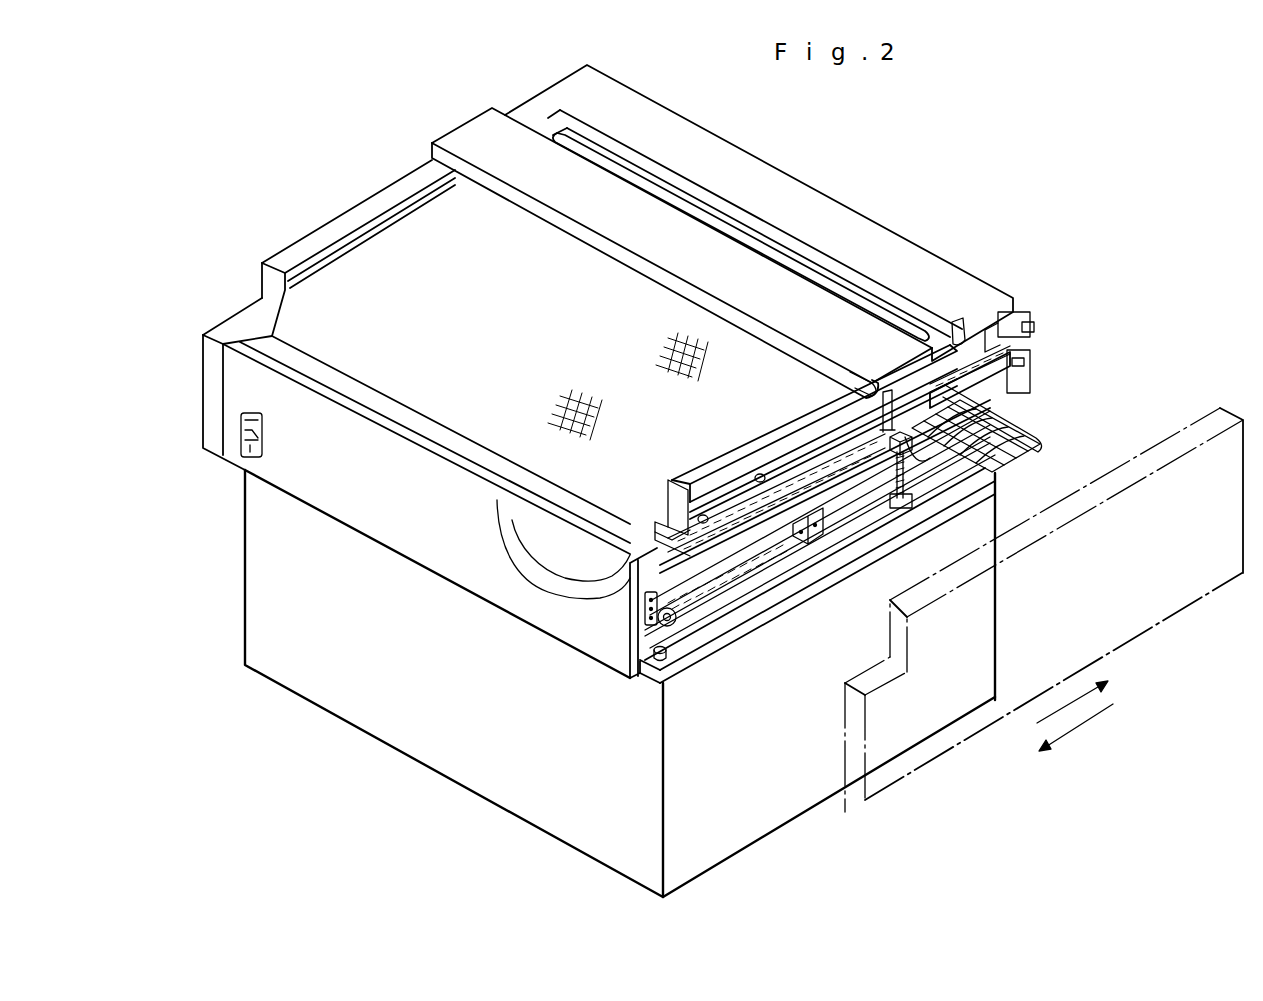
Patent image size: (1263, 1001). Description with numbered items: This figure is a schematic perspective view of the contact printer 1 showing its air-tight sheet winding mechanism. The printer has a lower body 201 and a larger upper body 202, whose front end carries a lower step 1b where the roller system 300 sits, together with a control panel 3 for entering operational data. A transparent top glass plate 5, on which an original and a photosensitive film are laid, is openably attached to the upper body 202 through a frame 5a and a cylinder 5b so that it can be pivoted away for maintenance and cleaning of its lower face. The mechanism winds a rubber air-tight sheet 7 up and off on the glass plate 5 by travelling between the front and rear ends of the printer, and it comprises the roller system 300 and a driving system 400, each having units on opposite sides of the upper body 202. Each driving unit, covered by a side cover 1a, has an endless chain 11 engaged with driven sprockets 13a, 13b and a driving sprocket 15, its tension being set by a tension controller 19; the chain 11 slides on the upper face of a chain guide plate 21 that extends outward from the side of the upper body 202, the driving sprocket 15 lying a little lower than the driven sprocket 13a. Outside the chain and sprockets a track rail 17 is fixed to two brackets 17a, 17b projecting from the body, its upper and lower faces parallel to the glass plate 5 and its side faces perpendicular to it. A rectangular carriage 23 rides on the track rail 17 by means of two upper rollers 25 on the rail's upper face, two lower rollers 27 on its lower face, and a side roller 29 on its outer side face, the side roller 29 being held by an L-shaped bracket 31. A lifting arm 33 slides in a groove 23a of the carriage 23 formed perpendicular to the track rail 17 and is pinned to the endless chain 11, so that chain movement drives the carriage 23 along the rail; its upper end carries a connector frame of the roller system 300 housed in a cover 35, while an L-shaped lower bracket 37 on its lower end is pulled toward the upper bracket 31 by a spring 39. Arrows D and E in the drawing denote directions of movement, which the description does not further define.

The contact printer 1 is at (954, 171).
The side cover 1a is at (1190, 418).
The lower step 1b is at (243, 293).
The control panel 3 is at (560, 556).
The transparent top glass plate 5 is at (807, 277).
The frame 5a is at (948, 332).
The cylinder 5b is at (765, 470).
The rubber air-tight sheet 7 is at (396, 244).
The endless chain 11 is at (730, 580).
The driven sprocket 13a is at (665, 575).
The driven sprocket 13b is at (639, 680).
The driving sprocket 15 is at (1034, 349).
The track rail 17 is at (1005, 390).
The bracket 17a is at (645, 616).
The bracket 17b is at (1037, 374).
The tension controller 19 is at (797, 560).
The chain guide plate 21 is at (1040, 452).
The rectangular carriage 23 is at (872, 432).
The groove 23a is at (872, 427).
The upper rollers 25 is at (998, 478).
The lower rollers 27 is at (922, 470).
The side roller 29 is at (934, 456).
The L-shaped bracket 31 is at (890, 393).
The lifting arm 33 is at (852, 386).
The cover 35 is at (485, 125).
The L-shaped lower bracket 37 is at (905, 480).
The spring 39 is at (900, 502).
The lower body 201 is at (246, 612).
The upper body 202 is at (228, 432).
The roller system 300 is at (431, 129).
The driving system 400 is at (1050, 279).
The direction D is at (1058, 710).
The direction E is at (1077, 728).